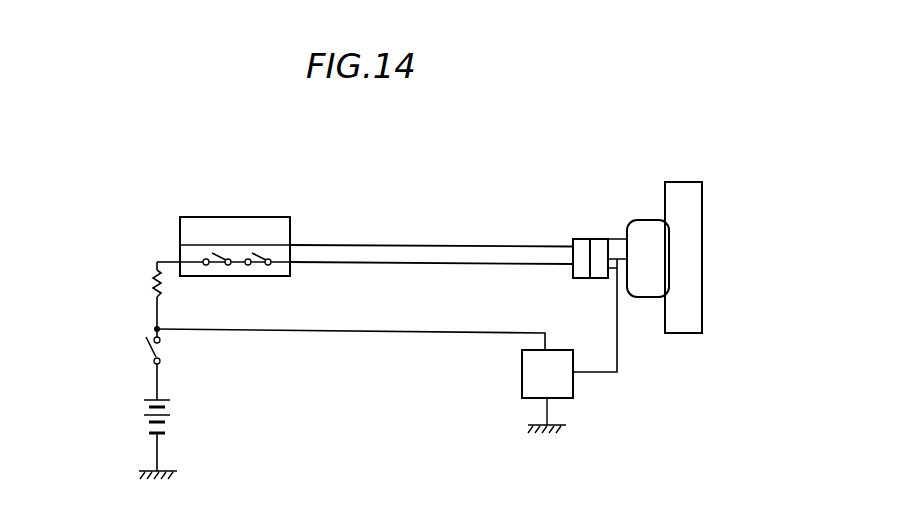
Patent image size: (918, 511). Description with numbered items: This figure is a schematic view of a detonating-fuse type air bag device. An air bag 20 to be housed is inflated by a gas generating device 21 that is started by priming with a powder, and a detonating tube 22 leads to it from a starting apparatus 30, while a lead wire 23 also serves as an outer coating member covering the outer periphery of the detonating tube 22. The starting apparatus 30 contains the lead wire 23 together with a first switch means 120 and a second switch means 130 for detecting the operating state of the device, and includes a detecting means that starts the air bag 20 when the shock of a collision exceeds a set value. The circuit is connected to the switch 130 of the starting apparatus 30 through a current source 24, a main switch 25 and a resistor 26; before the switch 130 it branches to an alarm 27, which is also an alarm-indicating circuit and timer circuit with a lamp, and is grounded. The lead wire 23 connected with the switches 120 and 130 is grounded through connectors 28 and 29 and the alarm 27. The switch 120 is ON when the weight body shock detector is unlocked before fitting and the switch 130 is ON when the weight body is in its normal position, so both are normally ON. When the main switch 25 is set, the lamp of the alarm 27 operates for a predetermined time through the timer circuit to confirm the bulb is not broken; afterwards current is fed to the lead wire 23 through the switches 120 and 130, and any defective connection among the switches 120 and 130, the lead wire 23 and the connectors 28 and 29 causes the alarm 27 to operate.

The air bag 20 is at (686, 196).
The gas generating device 21 is at (643, 225).
The detonating tube 22 is at (467, 244).
The lead wire 23 is at (437, 265).
The current source 24 is at (143, 418).
The main switch 25 is at (145, 346).
The resistor 26 is at (155, 284).
The alarm 27 is at (530, 372).
The connector 28 is at (581, 270).
The connector 29 is at (597, 248).
The starting apparatus 30 is at (256, 217).
The first switch means 120 is at (283, 246).
The second switch means 130 is at (217, 252).